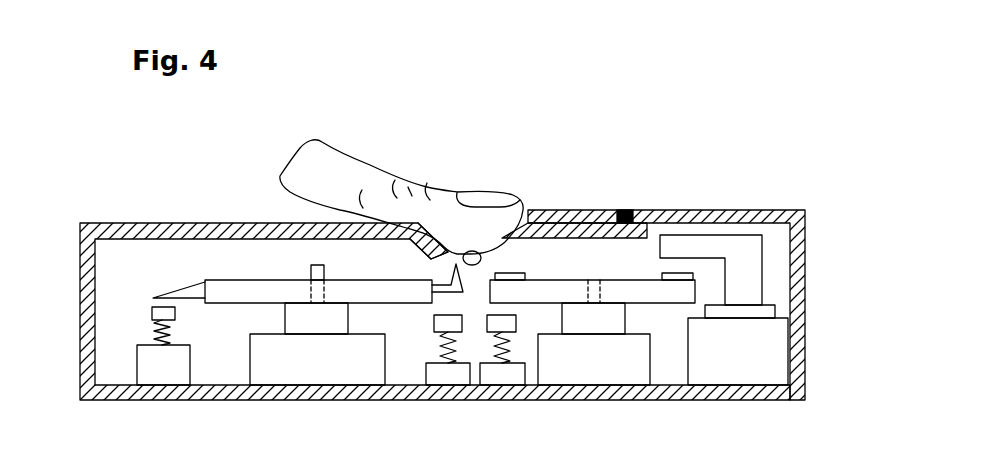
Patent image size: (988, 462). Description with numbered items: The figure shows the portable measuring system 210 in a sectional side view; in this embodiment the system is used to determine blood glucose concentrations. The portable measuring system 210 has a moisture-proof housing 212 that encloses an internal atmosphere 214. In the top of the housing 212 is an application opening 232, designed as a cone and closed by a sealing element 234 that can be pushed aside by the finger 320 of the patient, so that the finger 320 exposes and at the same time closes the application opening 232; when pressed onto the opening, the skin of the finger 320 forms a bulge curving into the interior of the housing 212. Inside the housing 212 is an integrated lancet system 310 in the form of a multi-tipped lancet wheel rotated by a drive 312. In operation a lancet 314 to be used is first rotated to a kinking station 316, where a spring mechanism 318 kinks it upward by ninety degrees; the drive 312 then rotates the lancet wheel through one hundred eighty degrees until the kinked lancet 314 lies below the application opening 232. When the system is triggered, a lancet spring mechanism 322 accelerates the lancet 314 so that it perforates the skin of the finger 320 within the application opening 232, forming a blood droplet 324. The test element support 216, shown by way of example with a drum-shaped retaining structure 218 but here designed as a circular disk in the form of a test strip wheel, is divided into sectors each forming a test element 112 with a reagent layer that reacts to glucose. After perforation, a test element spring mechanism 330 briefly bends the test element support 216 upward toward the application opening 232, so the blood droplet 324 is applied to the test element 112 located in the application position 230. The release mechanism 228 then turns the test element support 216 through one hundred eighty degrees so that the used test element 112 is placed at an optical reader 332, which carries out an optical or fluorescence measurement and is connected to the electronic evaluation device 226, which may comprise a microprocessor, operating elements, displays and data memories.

The portable measuring system 210 is at (742, 131).
The housing 212 is at (782, 217).
The internal atmosphere 214 is at (117, 258).
The electronic evaluation device 226 is at (758, 367).
The release mechanism 228 is at (605, 343).
The application position 230 is at (497, 266).
The application opening 232 is at (452, 236).
The sealing element 234 is at (556, 204).
The test element 112 is at (521, 268).
The lancet system 310 is at (242, 275).
The drive 312 is at (317, 368).
The lancet 314 is at (180, 294).
The kinking station 316 is at (146, 311).
The spring mechanism 318 is at (141, 324).
The finger 320 is at (339, 165).
The lancet spring mechanism 322 is at (443, 373).
The blood droplet 324 is at (470, 251).
The test element spring mechanism 330 is at (507, 373).
The optical reader 332 is at (700, 237).
The test element support 216 is at (667, 292).
The retaining structure 218 is at (667, 292).